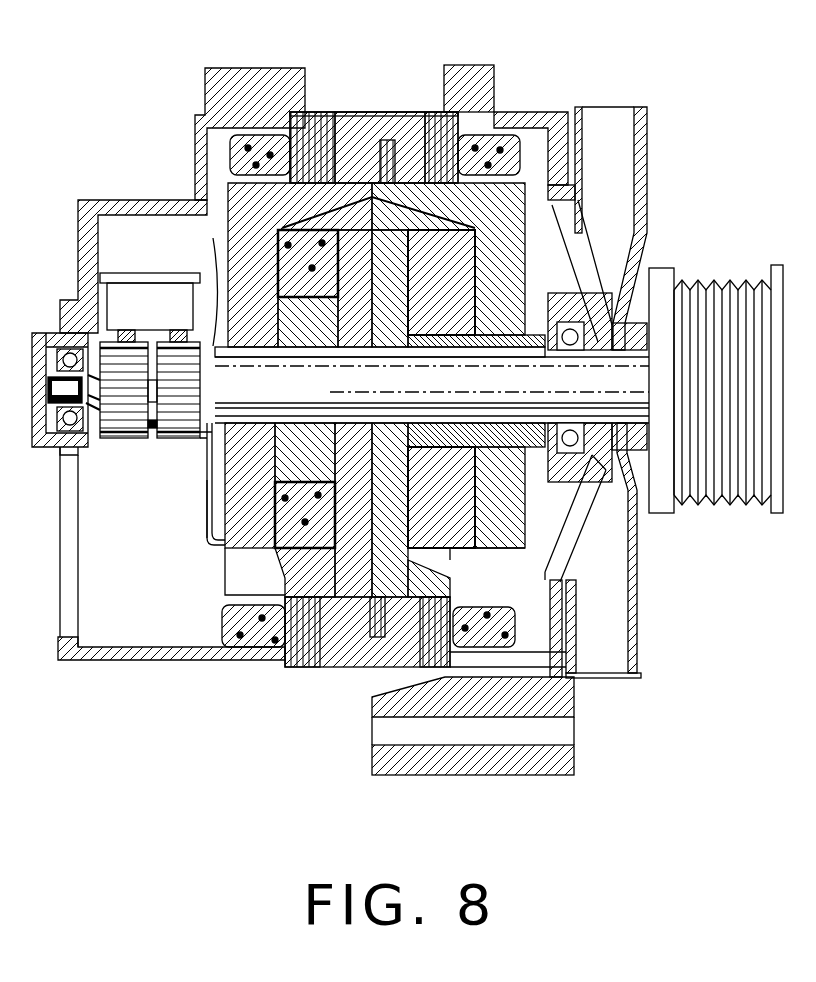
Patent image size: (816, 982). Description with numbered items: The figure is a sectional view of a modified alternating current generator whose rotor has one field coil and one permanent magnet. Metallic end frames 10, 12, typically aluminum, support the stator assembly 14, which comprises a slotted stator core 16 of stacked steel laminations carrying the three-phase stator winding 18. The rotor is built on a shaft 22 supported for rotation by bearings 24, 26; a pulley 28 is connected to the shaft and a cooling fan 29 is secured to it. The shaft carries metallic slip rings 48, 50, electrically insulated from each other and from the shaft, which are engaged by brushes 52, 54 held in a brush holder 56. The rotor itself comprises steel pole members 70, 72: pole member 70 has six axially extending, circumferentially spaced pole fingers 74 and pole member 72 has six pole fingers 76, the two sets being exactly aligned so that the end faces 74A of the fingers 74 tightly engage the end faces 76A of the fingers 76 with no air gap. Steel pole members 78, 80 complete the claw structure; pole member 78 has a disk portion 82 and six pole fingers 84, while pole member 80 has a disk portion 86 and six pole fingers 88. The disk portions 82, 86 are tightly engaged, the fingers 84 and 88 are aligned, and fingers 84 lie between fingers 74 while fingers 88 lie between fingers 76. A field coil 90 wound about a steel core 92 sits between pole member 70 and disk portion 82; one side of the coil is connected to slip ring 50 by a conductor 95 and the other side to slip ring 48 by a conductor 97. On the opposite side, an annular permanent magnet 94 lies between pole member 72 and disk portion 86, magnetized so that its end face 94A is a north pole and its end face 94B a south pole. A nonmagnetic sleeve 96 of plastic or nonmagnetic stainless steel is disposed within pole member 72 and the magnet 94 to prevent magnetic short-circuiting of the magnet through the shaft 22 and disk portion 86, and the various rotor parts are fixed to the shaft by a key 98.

The end frame 10 is at (252, 68).
The end frame 12 is at (470, 65).
The stator assembly 14 is at (398, 185).
The stator core 16 is at (336, 190).
The stator winding 18 is at (548, 128).
The shaft 22 is at (210, 440).
The bearing 24 is at (66, 352).
The bearing 26 is at (603, 345).
The pulley 28 is at (722, 265).
The cooling fan 29 is at (647, 182).
The slip ring 48 is at (120, 440).
The slip ring 50 is at (175, 420).
The brush 52 is at (128, 330).
The brush 54 is at (180, 330).
The brush holder 56 is at (165, 248).
The pole member 70 is at (248, 205).
The pole member 72 is at (568, 108).
The pole fingers 74 is at (340, 190).
The end faces 74A is at (404, 100).
The pole fingers 76 is at (492, 112).
The end faces 76A is at (380, 190).
The pole member 78 is at (365, 245).
The pole member 80 is at (400, 244).
The disk portion 82 is at (358, 440).
The pole fingers 84 is at (318, 605).
The disk portion 86 is at (400, 440).
The pole fingers 88 is at (400, 590).
The field coil 90 is at (310, 565).
The steel core 92 is at (265, 455).
The permanent magnet 94 is at (450, 515).
The end face 94A is at (495, 490).
The end face 94B is at (445, 552).
The conductor 95 is at (208, 520).
The nonmagnetic sleeve 96 is at (510, 342).
The conductor 97 is at (208, 284).
The key 98 is at (535, 378).